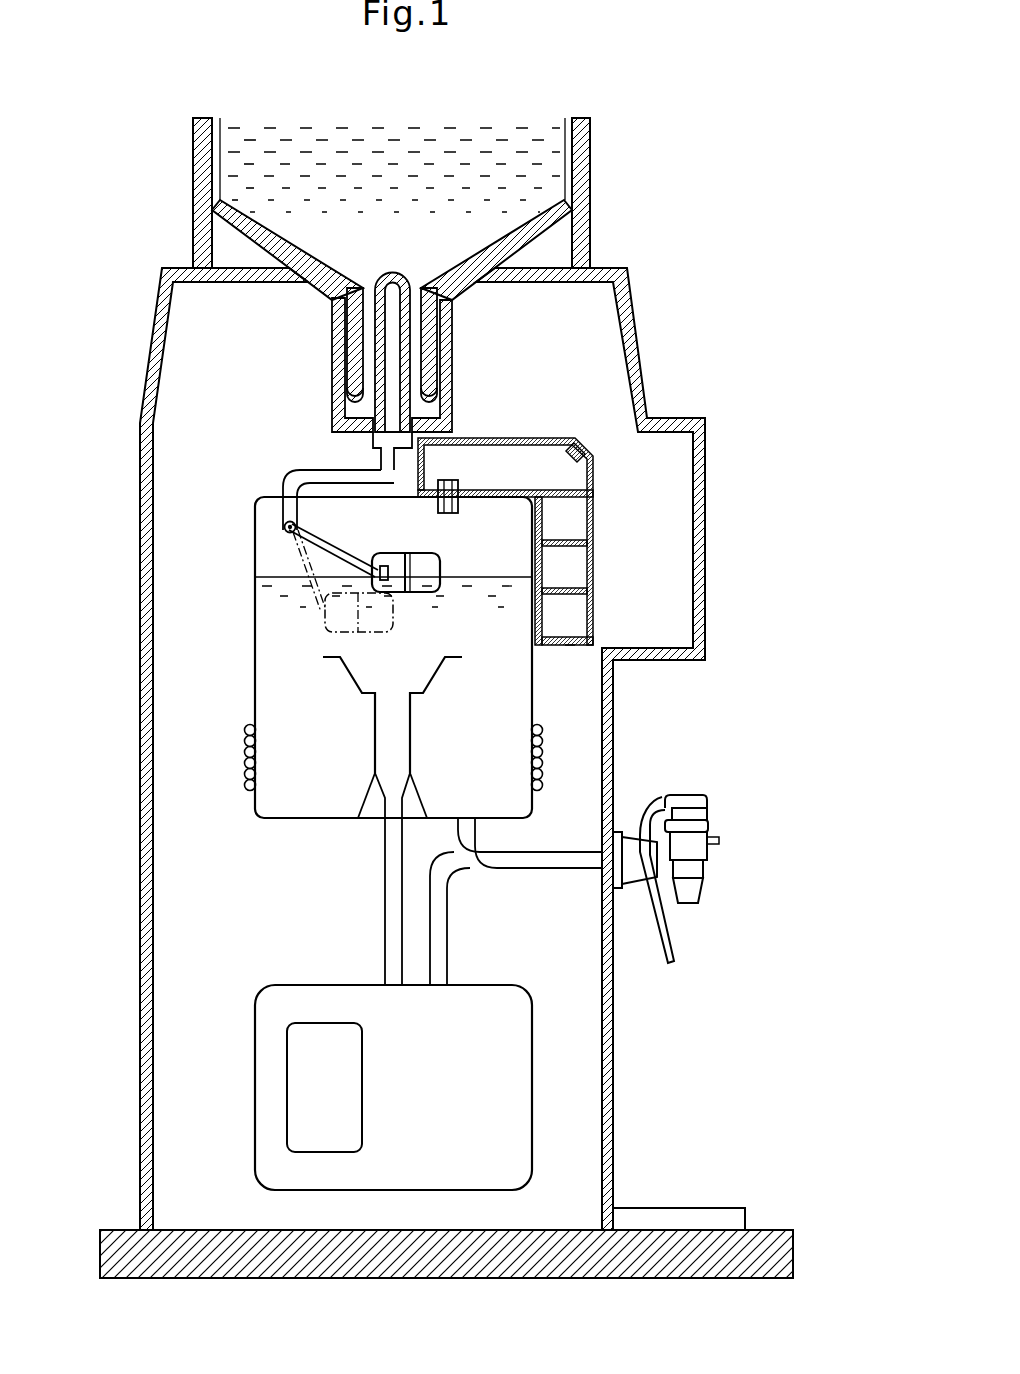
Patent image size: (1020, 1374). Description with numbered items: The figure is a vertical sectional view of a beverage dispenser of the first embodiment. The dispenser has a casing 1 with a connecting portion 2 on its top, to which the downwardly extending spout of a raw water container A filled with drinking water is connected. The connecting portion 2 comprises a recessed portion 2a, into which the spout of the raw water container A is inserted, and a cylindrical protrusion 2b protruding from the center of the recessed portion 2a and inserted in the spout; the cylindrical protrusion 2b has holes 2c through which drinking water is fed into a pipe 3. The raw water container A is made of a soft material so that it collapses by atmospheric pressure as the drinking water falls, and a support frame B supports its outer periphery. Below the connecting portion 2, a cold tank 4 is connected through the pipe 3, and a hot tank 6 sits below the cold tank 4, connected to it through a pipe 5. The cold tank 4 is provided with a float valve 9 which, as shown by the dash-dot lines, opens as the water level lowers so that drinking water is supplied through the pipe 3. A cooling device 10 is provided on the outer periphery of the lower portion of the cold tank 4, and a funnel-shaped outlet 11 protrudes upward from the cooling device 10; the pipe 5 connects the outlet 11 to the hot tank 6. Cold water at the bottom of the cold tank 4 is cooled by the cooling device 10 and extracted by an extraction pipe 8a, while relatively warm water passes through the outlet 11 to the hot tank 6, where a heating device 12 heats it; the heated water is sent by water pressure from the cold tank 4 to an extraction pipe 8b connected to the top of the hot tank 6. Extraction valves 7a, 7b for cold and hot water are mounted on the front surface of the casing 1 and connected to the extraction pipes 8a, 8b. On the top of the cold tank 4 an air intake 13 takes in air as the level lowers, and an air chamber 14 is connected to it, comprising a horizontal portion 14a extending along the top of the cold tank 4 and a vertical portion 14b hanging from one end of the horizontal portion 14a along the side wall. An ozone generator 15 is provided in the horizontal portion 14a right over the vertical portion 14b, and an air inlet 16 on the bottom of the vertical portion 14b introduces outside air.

The casing 1 is at (141, 476).
The connecting portion 2 is at (345, 372).
The recessed portion 2a is at (356, 395).
The cylindrical protrusion 2b is at (378, 358).
The holes 2c is at (380, 330).
The pipe 3 is at (340, 478).
The cold tank 4 is at (255, 655).
The pipe 5 is at (390, 868).
The hot tank 6 is at (309, 1087).
The extraction valve 7a is at (688, 840).
The extraction valve 7b is at (657, 880).
The extraction pipe 8a is at (520, 858).
The extraction pipe 8b is at (438, 918).
The float valve 9 is at (380, 562).
The cooling device 10 is at (244, 750).
The funnel-shaped outlet 11 is at (427, 680).
The heating device 12 is at (308, 1070).
The air intake 13 is at (468, 478).
The air chamber 14 is at (574, 497).
The horizontal portion 14a is at (522, 460).
The vertical portion 14b is at (566, 523).
The ozone generator 15 is at (583, 440).
The air inlet 16 is at (565, 646).
The raw water container A is at (574, 160).
The support frame B is at (580, 218).